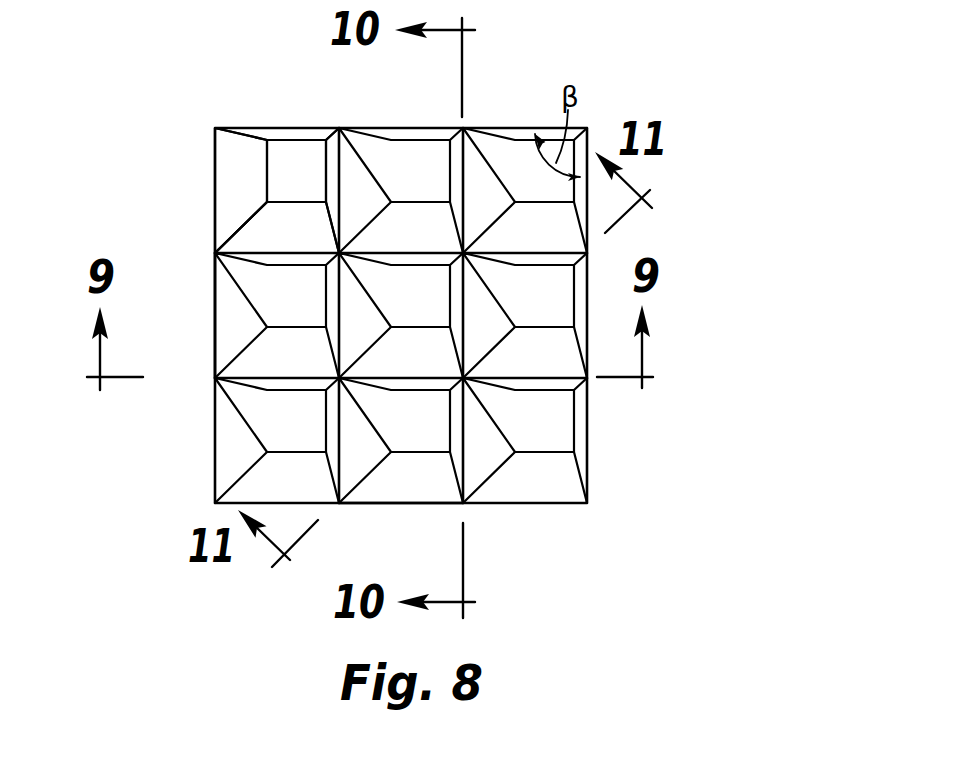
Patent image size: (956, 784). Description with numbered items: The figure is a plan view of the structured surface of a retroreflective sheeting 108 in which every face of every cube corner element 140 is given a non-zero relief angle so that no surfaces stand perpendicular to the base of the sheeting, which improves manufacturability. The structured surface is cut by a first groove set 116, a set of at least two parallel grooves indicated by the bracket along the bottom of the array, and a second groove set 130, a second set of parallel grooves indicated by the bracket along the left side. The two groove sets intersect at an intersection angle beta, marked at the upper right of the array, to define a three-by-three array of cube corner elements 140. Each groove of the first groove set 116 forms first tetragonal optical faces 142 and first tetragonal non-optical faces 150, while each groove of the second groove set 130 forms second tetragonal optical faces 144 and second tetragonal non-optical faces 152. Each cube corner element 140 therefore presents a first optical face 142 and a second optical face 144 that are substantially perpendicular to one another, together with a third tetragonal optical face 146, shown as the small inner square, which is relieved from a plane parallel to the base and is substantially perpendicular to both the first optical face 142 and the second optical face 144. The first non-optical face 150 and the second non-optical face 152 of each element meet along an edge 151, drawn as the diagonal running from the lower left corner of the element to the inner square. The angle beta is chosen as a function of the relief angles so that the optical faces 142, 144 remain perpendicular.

The retroreflective sheeting 108 is at (628, 100).
The cube corner element 140 is at (246, 161).
The first tetragonal optical face 142 is at (348, 127).
The second tetragonal optical face 144 is at (285, 138).
The third tetragonal optical face 146 is at (322, 188).
The first tetragonal non-optical face 150 is at (262, 198).
The edge 151 is at (240, 230).
The second tetragonal non-optical face 152 is at (320, 240).
The second groove set 130 is at (212, 260).
The first groove set 116 is at (460, 507).